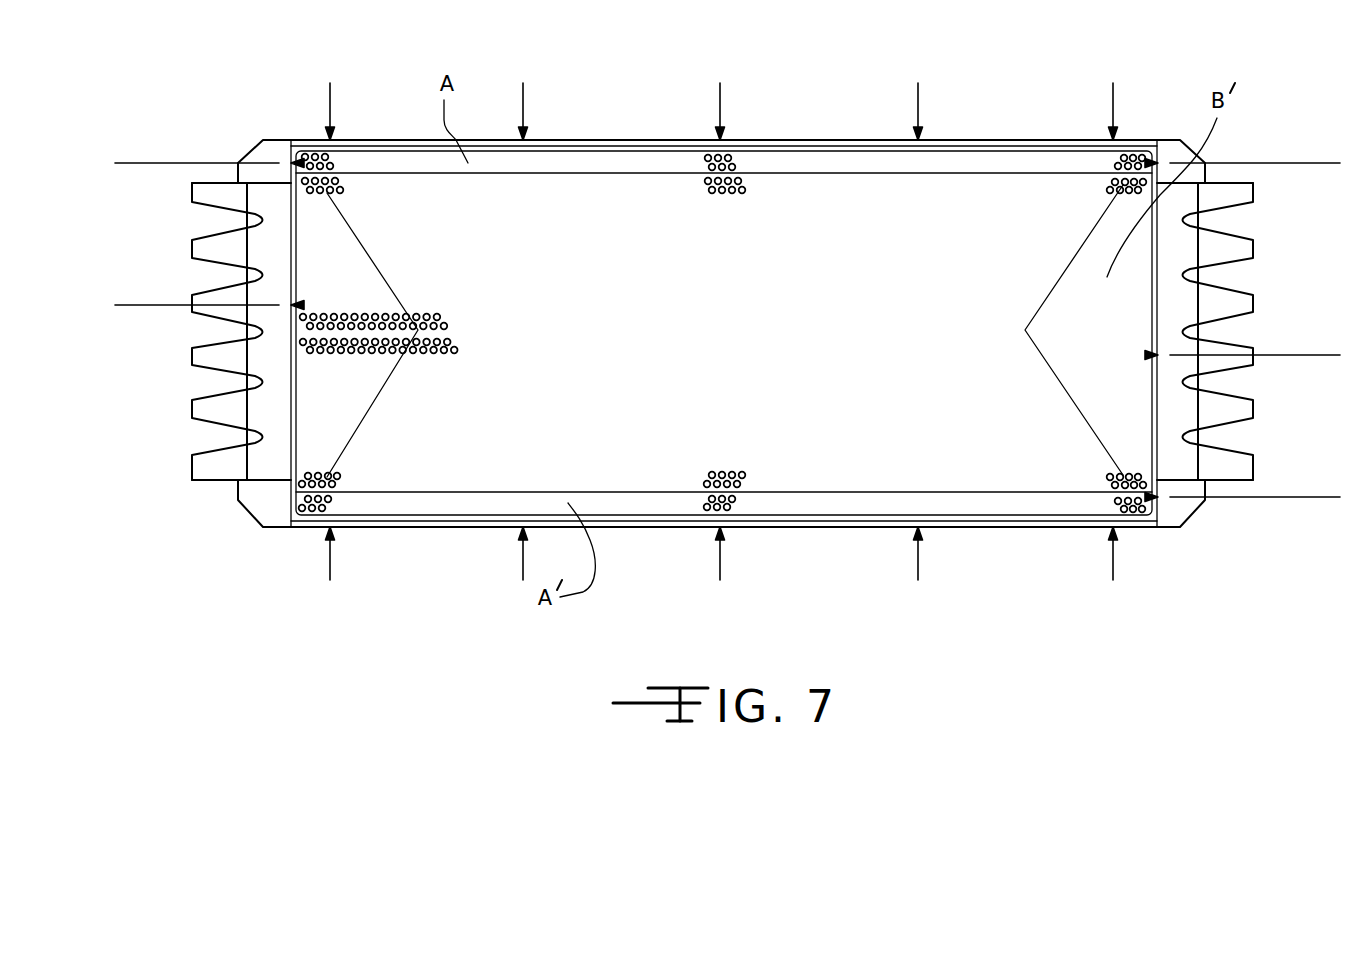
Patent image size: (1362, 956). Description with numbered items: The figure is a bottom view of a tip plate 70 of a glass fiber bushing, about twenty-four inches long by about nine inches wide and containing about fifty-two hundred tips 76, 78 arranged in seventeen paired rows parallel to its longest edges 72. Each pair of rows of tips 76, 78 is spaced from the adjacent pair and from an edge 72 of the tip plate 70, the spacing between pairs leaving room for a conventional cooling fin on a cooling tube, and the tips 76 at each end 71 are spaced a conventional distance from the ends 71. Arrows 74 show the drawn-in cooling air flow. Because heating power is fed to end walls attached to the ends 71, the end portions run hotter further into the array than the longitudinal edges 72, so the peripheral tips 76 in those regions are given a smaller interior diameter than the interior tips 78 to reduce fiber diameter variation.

The tip plate 70 is at (597, 151).
The end 71 is at (345, 339).
The edge 72 is at (788, 140).
The cooling air flow 74 is at (918, 100).
The tip 76 is at (331, 165).
The interior tip 78 is at (720, 190).